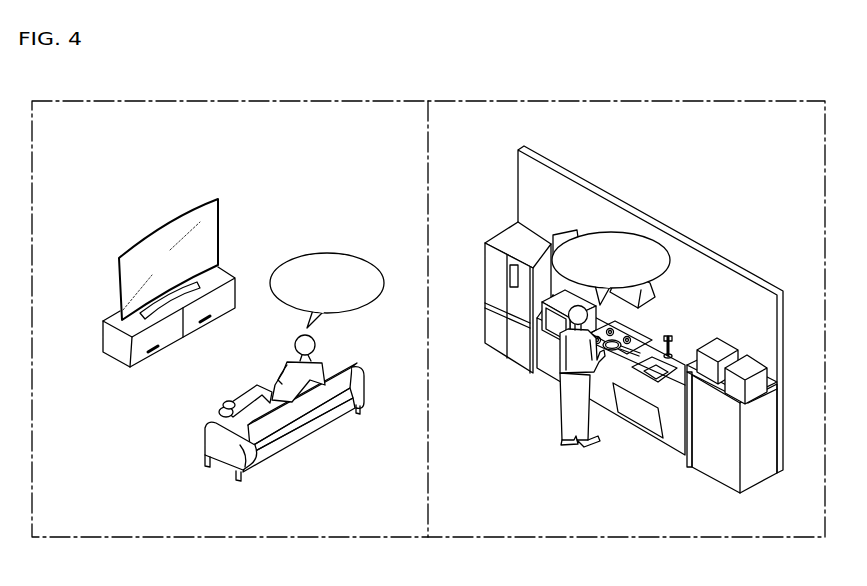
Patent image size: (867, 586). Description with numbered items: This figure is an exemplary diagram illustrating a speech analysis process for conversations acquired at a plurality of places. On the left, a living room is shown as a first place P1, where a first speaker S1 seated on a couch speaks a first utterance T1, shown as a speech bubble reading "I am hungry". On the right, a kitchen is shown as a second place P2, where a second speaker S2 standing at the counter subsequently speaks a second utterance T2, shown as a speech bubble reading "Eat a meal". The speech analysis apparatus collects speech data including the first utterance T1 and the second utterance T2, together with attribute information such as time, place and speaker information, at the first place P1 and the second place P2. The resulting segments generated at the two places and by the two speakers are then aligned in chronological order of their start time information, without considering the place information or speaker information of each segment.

The first place P1 is at (216, 301).
The second place P2 is at (614, 307).
The first utterance T1 is at (337, 252).
The second utterance T2 is at (618, 232).
The first speaker S1 is at (290, 360).
The second speaker S2 is at (563, 397).